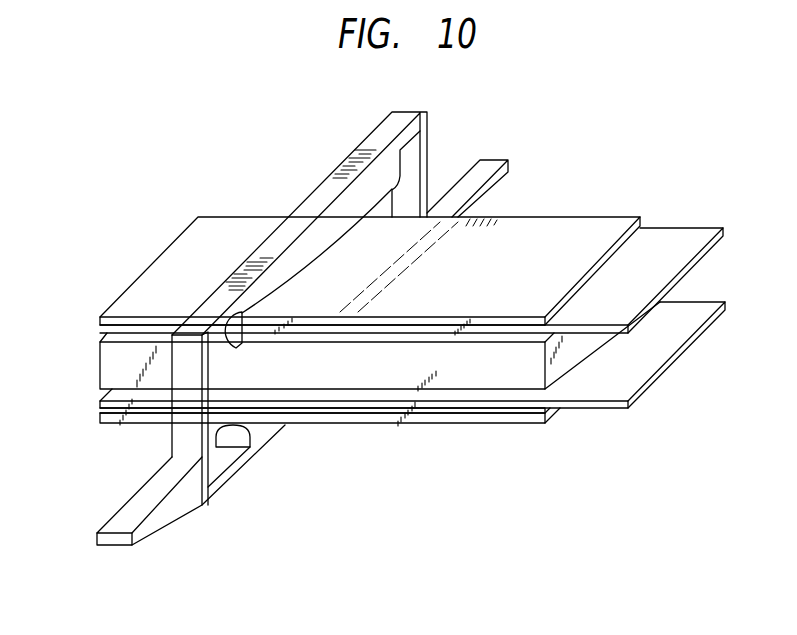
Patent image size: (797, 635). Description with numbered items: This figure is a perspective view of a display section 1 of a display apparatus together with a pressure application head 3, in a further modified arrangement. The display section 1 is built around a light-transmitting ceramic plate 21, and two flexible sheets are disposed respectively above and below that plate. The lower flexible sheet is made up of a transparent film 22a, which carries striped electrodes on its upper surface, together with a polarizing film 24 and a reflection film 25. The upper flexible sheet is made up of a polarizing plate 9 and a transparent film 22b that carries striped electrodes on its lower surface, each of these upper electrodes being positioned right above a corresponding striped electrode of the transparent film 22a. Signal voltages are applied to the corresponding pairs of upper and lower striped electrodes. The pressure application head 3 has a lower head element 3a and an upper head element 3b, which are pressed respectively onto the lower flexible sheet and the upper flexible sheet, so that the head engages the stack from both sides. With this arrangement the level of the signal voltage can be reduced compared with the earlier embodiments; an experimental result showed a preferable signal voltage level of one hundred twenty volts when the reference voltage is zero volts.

The display section 1 is at (76, 314).
The pressure application head 3 is at (197, 514).
The lower head element 3a is at (260, 432).
The upper head element 3b is at (323, 202).
The polarizing plate 9 is at (560, 232).
The light-transmitting ceramic plate 21 is at (527, 372).
The transparent film 22a is at (634, 373).
The transparent film 22b is at (667, 269).
The polarizing film 24 is at (485, 414).
The reflection film 25 is at (385, 421).